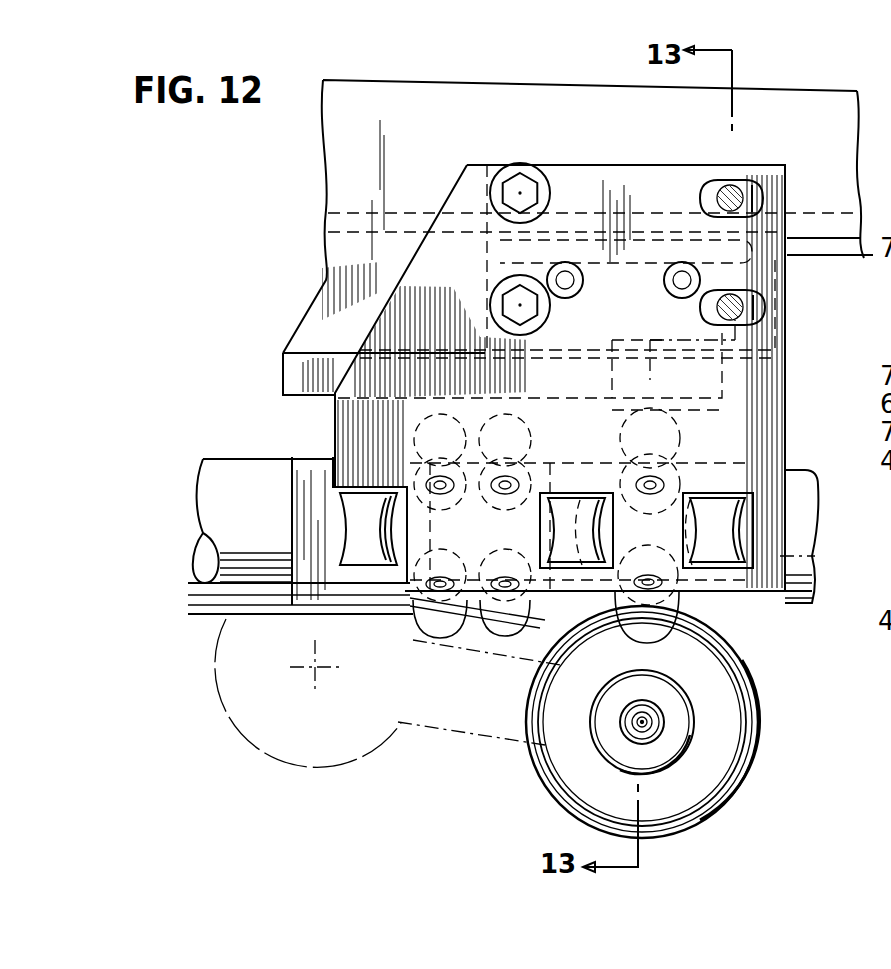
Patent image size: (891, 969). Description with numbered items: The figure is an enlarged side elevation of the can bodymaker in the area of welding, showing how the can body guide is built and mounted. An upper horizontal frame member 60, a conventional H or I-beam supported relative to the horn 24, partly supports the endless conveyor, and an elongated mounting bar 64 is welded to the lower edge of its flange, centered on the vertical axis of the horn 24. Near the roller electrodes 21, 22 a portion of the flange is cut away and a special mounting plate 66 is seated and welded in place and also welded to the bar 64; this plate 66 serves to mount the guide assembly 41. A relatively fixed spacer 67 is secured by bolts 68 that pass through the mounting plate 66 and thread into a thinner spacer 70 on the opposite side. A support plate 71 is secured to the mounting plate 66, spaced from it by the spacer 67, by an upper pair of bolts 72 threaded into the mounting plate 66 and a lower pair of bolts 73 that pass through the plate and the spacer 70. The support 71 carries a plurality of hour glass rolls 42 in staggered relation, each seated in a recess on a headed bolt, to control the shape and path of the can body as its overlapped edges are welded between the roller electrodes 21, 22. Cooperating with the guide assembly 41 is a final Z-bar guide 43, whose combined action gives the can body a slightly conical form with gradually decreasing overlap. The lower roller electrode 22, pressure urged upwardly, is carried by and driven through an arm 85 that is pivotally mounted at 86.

The roller electrode 21 is at (688, 465).
The lower roller electrode 22 is at (725, 683).
The horn 24 is at (250, 458).
The guide assembly 41 is at (790, 395).
The hour glass rolls 42 is at (448, 440).
The Z-bar guide 43 is at (352, 613).
The upper horizontal frame member 60 is at (350, 177).
The mounting bar 64 is at (283, 370).
The mounting plate 66 is at (785, 275).
The spacer 67 is at (490, 325).
The bolts 68 is at (672, 285).
The thinner spacer 70 is at (490, 270).
The support plate 71 is at (745, 401).
The upper pair of bolts 72 is at (510, 185).
The lower pair of bolts 73 is at (532, 312).
The arm 85 is at (476, 727).
The pivot mounting 86 is at (307, 680).